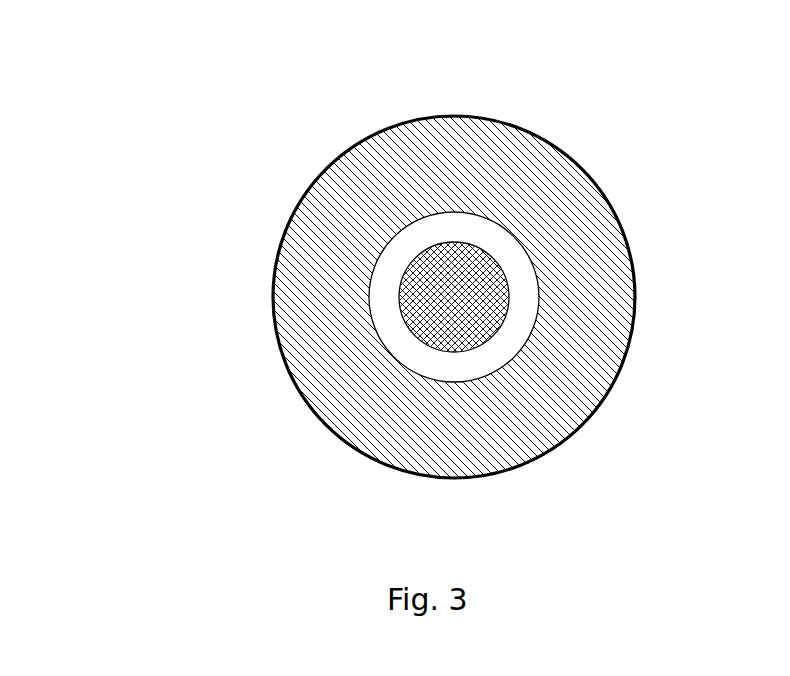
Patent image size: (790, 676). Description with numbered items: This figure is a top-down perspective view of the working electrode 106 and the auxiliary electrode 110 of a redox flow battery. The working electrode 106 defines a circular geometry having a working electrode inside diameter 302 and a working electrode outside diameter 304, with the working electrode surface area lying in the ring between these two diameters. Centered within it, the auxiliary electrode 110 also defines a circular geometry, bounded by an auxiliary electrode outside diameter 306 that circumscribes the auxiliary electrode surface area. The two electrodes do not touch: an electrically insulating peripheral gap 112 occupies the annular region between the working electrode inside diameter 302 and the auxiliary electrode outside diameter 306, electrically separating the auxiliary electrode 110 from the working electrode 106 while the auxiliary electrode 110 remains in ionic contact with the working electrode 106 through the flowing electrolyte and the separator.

The working electrode 106 is at (117, 125).
The auxiliary electrode 110 is at (373, 355).
The electrically insulating peripheral gap 112 is at (560, 229).
The working electrode inside diameter 302 is at (452, 213).
The working electrode outside diameter 304 is at (422, 297).
The auxiliary electrode outside diameter 306 is at (337, 337).